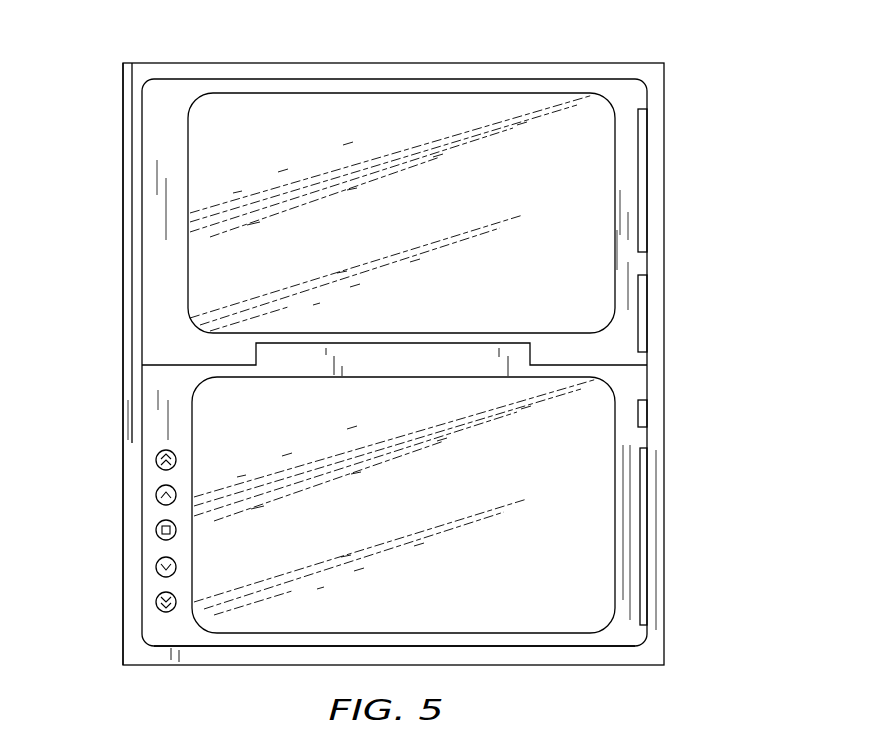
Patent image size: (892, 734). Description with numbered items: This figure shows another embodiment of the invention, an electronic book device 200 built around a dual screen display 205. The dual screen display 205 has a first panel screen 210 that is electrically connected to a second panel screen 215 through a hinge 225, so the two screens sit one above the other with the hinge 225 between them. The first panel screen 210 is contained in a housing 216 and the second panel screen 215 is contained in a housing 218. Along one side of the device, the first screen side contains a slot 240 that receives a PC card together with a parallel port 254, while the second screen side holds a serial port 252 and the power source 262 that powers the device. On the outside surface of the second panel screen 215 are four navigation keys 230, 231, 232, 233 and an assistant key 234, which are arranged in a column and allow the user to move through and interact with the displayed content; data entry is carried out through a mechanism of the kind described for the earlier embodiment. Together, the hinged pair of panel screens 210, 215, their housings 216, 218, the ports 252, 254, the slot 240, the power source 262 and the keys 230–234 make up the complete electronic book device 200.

The electronic book device 200 is at (598, 43).
The dual screen display 205 is at (123, 417).
The first panel screen 210 is at (445, 103).
The second panel screen 215 is at (595, 508).
The housing 216 is at (162, 90).
The housing 218 is at (578, 642).
The hinge 225 is at (530, 353).
The navigation key 230 is at (155, 460).
The navigation key 231 is at (155, 495).
The navigation key 232 is at (155, 567).
The navigation key 233 is at (155, 603).
The assistant key 234 is at (155, 530).
The slot 240 is at (647, 194).
The serial port 252 is at (647, 412).
The parallel port 254 is at (647, 307).
The power source 262 is at (648, 549).